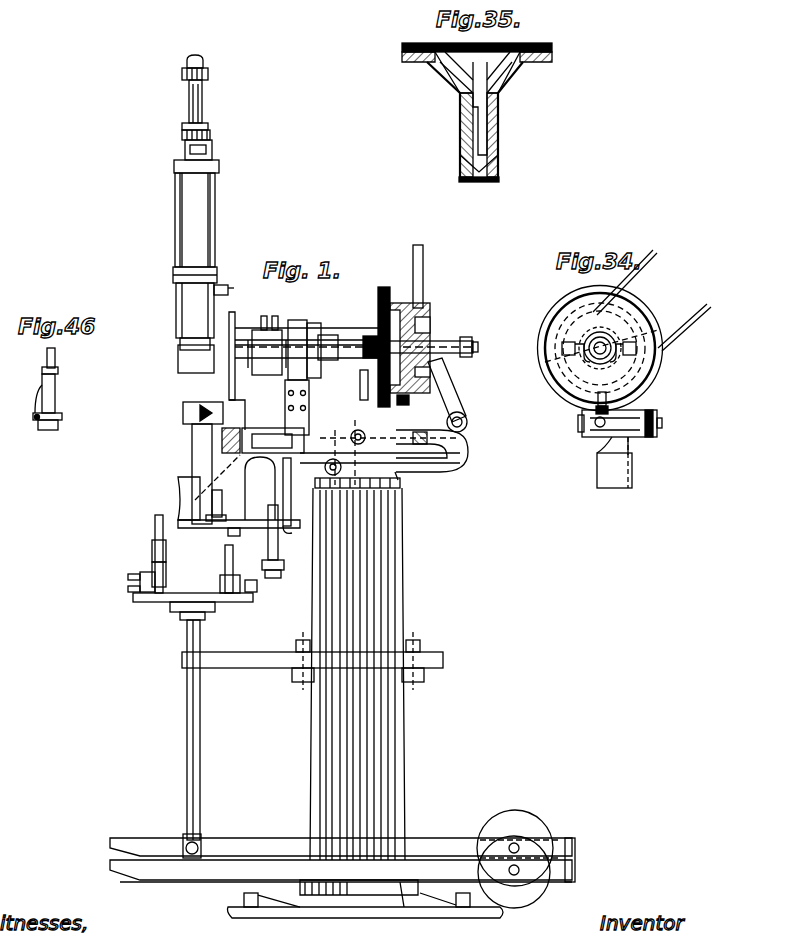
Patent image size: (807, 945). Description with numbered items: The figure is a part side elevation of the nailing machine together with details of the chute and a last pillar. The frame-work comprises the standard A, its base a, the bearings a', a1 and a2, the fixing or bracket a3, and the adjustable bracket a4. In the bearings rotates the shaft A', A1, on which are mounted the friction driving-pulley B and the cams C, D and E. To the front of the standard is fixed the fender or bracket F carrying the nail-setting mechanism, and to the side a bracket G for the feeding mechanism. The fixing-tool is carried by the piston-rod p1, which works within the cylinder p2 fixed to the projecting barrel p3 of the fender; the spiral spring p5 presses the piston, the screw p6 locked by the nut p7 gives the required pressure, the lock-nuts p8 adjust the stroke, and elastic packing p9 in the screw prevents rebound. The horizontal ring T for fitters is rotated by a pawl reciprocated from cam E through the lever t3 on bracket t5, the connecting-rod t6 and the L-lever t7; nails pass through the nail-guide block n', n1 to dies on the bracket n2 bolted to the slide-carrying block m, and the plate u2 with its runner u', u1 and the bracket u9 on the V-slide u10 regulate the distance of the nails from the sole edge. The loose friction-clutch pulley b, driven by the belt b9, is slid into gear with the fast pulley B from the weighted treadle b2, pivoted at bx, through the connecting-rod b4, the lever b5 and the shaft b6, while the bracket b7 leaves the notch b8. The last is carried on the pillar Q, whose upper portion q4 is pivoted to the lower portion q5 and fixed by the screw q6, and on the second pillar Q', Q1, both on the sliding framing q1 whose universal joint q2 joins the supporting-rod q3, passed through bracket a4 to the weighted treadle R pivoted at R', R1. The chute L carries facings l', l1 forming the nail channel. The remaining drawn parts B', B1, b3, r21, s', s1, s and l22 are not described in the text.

In FIG. 1, the lock-nuts p8 is at (186, 64).
In FIG. 1, the spiral spring p5 is at (186, 80).
In FIG. 1, the piston-rod p1 is at (202, 110).
In FIG. 1, the india-rubber or elastic packing p9 is at (182, 126).
In FIG. 1, the screw p6 is at (210, 134).
In FIG. 1, the nut p7 is at (212, 154).
In FIG. 1, the cylinder p2 is at (176, 195).
In FIG. 1, the projecting barrel p3 is at (178, 298).
In FIG. 1, the cam D is at (228, 292).
In FIG. 1, the fender or bracket F is at (178, 362).
In FIG. 1, the bracket G is at (239, 371).
In FIG. 1, the bearing a' is at (266, 310).
In FIG. 1, the bearing a1 is at (266, 310).
In FIG. 1, the cam C is at (267, 352).
In FIG. 1, the bearing a2 is at (340, 330).
In FIG. 1, the lever t3 is at (297, 320).
In FIG. 1, the cam E is at (313, 323).
In FIG. 1, the bracket t5 is at (330, 335).
In FIG. 1, the connecting-rod t6 is at (309, 390).
In FIG. 1, the flange B' is at (391, 334).
In FIG. 1, the flange B1 is at (391, 334).
In FIG. 1, the friction-clutch pulley b is at (430, 312).
In FIG. 34, the friction-clutch pulley b is at (605, 320).
In FIG. 1, the belt b9 is at (423, 258).
In FIG. 34, the belt b9 is at (653, 262).
In FIG. 1, the shaft A' is at (430, 347).
In FIG. 1, the shaft A1 is at (430, 347).
In FIG. 1, the arm b3 is at (457, 392).
In FIG. 34, the arm b3 is at (610, 402).
In FIG. 1, the lever b5 is at (403, 405).
In FIG. 34, the lever b5 is at (640, 437).
In FIG. 1, the notch b8 is at (362, 395).
In FIG. 34, the notch b8 is at (578, 420).
In FIG. 1, the shaft b6 is at (467, 420).
In FIG. 34, the shaft b6 is at (662, 422).
In FIG. 1, the bracket b7 is at (345, 428).
In FIG. 34, the bracket b7 is at (596, 424).
In FIG. 1, the L-lever t7 is at (350, 470).
In FIG. 1, the horizontal ring T is at (275, 428).
In FIG. 1, the standard A is at (335, 650).
In FIG. 34, the standard A is at (622, 337).
In FIG. 1, the fixing or bracket a3 is at (460, 470).
In FIG. 34, the fixing or bracket a3 is at (614, 462).
In FIG. 1, the connecting-rod b4 is at (400, 480).
In FIG. 1, the slide-carrying block m is at (183, 412).
In FIG. 1, the fixing or bracket n2 is at (239, 476).
In FIG. 1, the nail-guide block n' is at (173, 498).
In FIG. 1, the nail-guide block n1 is at (173, 498).
In FIG. 1, the rod r21 is at (228, 470).
In FIG. 1, the V-slide u10 is at (266, 488).
In FIG. 1, the block s' is at (230, 501).
In FIG. 1, the block s1 is at (230, 501).
In FIG. 1, the plate s is at (228, 510).
In FIG. 1, the bracket u9 is at (291, 504).
In FIG. 1, the runner u' is at (223, 540).
In FIG. 1, the runner u1 is at (223, 540).
In FIG. 1, the plate u2 is at (268, 535).
In FIG. 1, the pillar Q is at (143, 554).
In FIG. 46, the pillar Q is at (56, 380).
In FIG. 1, the upper portion of pillar q4 is at (166, 548).
In FIG. 46, the upper portion of pillar q4 is at (58, 371).
In FIG. 1, the lower portion of pillar q5 is at (166, 566).
In FIG. 46, the lower portion of pillar q5 is at (55, 410).
In FIG. 1, the screw q6 is at (128, 577).
In FIG. 46, the screw q6 is at (36, 420).
In FIG. 1, the second pillar Q' is at (240, 569).
In FIG. 1, the second pillar Q1 is at (240, 569).
In FIG. 1, the sliding framing q1 is at (165, 602).
In FIG. 1, the universal joint q2 is at (185, 620).
In FIG. 1, the supporting-rod q3 is at (200, 735).
In FIG. 1, the adjustable bracket a4 is at (312, 659).
In FIG. 1, the weighted treadle R is at (342, 845).
In FIG. 1, the pivot R' is at (341, 845).
In FIG. 1, the pivot R1 is at (341, 845).
In FIG. 1, the weighted treadle b2 is at (140, 882).
In FIG. 1, the base a is at (362, 907).
In FIG. 1, the pivot bx is at (404, 907).
In FIG. 1, the friction driving-pulley B is at (518, 859).
In FIG. 34, the friction driving-pulley B is at (600, 344).
In FIG. 35, the chute L is at (460, 134).
In FIG. 35, the bore l22 is at (480, 90).
In FIG. 35, the facing l' is at (480, 191).
In FIG. 35, the facing l1 is at (480, 191).